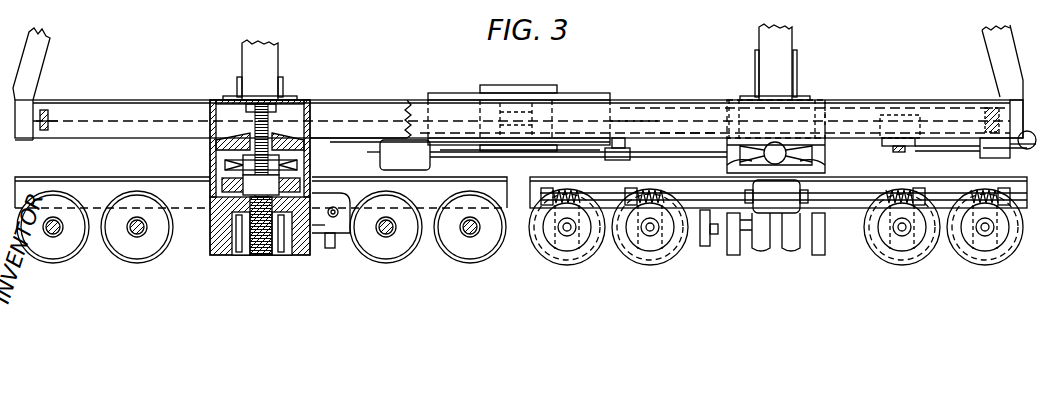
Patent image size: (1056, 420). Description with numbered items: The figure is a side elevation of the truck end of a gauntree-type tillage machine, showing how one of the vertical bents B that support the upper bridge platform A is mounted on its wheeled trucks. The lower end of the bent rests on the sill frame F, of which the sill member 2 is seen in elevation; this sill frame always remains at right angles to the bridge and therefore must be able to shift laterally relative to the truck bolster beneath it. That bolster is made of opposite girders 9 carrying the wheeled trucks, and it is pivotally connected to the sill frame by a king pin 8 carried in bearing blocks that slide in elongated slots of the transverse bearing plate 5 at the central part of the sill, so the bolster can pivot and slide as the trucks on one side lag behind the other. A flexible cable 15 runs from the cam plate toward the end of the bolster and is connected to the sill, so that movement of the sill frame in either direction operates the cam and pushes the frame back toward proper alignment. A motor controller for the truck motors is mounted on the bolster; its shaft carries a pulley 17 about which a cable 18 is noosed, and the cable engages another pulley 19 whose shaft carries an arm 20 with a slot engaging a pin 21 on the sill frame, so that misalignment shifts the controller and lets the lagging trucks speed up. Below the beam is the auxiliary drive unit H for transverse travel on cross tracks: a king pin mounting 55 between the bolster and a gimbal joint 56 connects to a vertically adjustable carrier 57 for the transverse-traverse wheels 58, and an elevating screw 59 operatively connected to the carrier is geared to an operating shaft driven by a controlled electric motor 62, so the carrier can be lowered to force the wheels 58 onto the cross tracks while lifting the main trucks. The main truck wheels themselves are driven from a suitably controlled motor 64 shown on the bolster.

The bridge platform A is at (110, 112).
The bents B is at (787, 44).
The auxiliary drive unit H is at (247, 70).
The sill frame F is at (857, 106).
The sill member 2 is at (670, 110).
The bearing plate 5 is at (585, 100).
The king pin 8 is at (527, 100).
The girder 9 is at (352, 108).
The flexible cable 15 is at (632, 118).
The pulley 17 is at (895, 146).
The cable 18 is at (930, 150).
The pulley 19 is at (962, 152).
The arm 20 is at (992, 156).
The pin 21 is at (1023, 151).
The king pin mounting 55 is at (262, 128).
The gimbal joint 56 is at (232, 163).
The vertically adjustable carrier 57 is at (220, 248).
The transverse-traverse wheels 58 is at (288, 248).
The elevating screw 59 is at (260, 183).
The electric motor 62 is at (547, 154).
The motor 64 is at (776, 196).